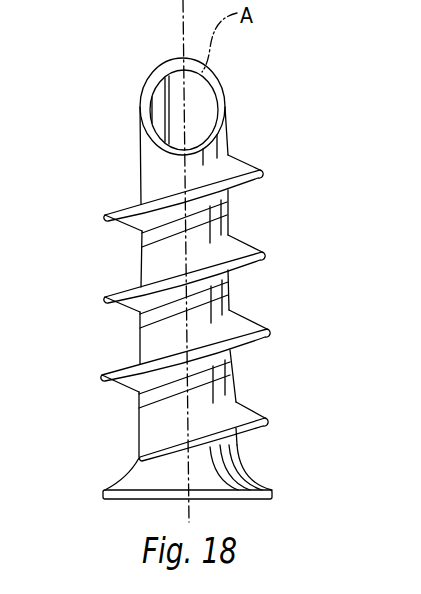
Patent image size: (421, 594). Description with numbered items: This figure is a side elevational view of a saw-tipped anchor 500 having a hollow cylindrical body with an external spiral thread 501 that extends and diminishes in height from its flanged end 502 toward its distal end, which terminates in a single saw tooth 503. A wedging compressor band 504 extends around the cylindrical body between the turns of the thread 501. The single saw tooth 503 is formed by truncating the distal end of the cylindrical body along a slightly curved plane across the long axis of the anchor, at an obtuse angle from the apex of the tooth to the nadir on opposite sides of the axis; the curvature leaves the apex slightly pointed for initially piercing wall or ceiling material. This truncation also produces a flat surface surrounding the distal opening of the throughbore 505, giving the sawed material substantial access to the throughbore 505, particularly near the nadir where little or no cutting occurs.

The anchor 500 is at (291, 238).
The external spiral thread 501 is at (228, 172).
The flanged end 502 is at (130, 480).
The single saw tooth 503 is at (207, 72).
The wedging compressor band 504 is at (233, 297).
The throughbore 505 is at (200, 110).